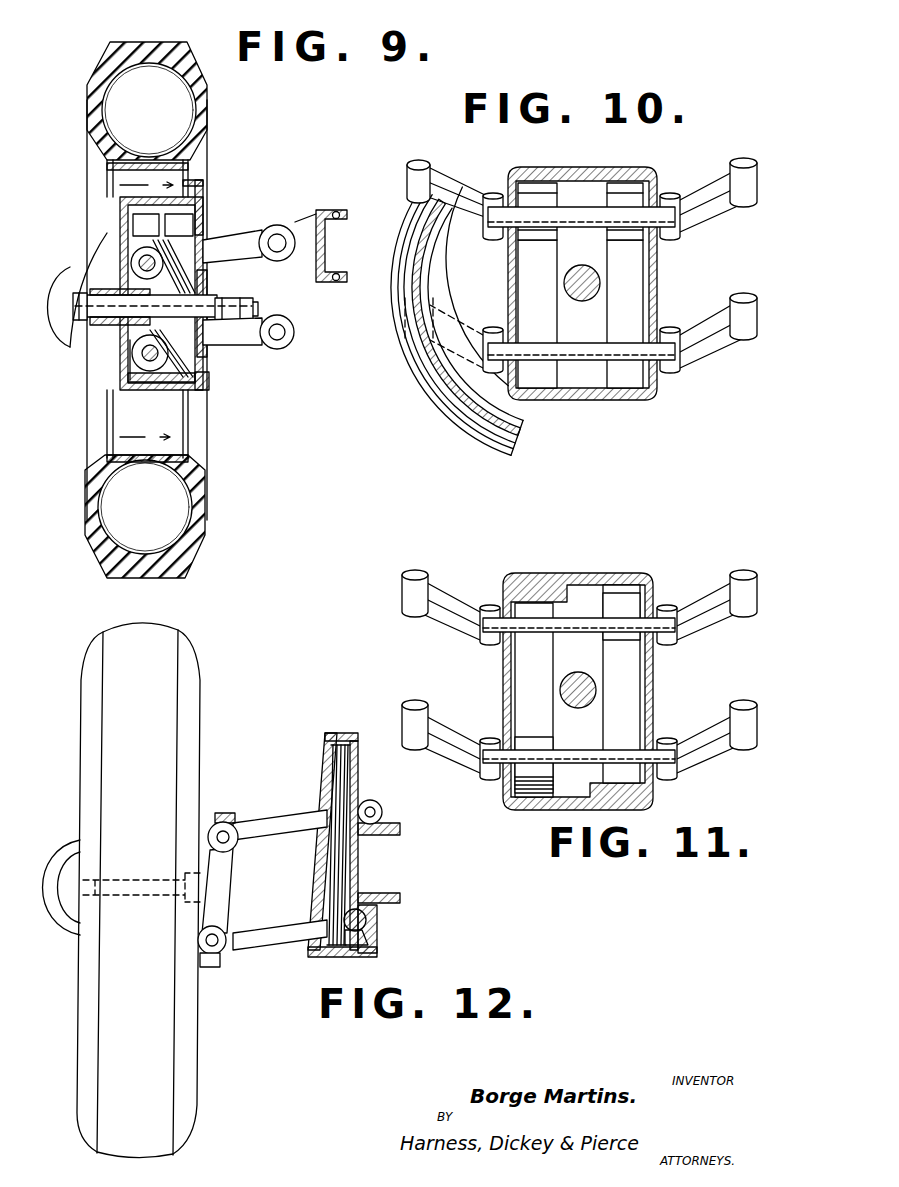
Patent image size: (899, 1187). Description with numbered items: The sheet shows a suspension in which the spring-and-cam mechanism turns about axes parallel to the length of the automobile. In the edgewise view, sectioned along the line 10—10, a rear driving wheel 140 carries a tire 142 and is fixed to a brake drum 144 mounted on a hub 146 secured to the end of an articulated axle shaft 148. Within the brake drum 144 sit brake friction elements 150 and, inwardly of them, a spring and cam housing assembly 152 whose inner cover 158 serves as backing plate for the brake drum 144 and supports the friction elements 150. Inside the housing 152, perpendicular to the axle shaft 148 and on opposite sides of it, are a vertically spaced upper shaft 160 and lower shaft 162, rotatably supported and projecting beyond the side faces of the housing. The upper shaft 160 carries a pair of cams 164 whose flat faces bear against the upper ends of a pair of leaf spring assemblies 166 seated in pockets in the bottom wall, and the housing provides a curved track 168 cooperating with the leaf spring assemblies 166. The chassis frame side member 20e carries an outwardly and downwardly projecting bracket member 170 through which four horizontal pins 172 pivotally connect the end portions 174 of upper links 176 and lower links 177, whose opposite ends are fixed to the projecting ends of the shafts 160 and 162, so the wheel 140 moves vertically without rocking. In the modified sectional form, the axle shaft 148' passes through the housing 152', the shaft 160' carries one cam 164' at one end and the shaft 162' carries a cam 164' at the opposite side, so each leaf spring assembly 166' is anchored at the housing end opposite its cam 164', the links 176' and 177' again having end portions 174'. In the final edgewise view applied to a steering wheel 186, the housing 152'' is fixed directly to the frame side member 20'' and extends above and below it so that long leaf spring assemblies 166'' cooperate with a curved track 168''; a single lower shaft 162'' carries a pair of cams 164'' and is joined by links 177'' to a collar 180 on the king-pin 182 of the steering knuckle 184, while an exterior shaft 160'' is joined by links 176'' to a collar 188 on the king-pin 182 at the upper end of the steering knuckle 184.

In FIG. 9, the section line 10 is at (146, 310).
In FIG. 9, the tire 142 is at (88, 124).
In FIG. 9, the wheel 140 is at (110, 186).
In FIG. 9, the brake drum 144 is at (118, 256).
In FIG. 10, the brake drum 144 is at (498, 448).
In FIG. 9, the hub 146 is at (125, 362).
In FIG. 9, the axle shaft 148 is at (144, 319).
In FIG. 10, the axle shaft 148 is at (632, 280).
In FIG. 9, the brake friction elements 150 is at (188, 215).
In FIG. 10, the brake friction elements 150 is at (462, 398).
In FIG. 9, the spring and cam housing assembly 152 is at (119, 302).
In FIG. 10, the spring and cam housing assembly 152 is at (595, 298).
In FIG. 9, the inner cover 158 is at (150, 384).
In FIG. 10, the upper shaft 160 is at (581, 185).
In FIG. 10, the lower shaft 162 is at (581, 391).
In FIG. 9, the cams 164 is at (101, 307).
In FIG. 10, the cams 164 is at (580, 211).
In FIG. 9, the leaf spring assemblies 166 is at (203, 308).
In FIG. 10, the leaf spring assemblies 166 is at (579, 314).
In FIG. 9, the curved track 168 is at (195, 217).
In FIG. 9, the bracket member 170 is at (283, 232).
In FIG. 9, the pins 172 is at (277, 253).
In FIG. 9, the end portions 174 is at (298, 271).
In FIG. 10, the end portions 174 is at (595, 239).
In FIG. 9, the upper links 176 is at (241, 299).
In FIG. 10, the upper links 176 is at (556, 199).
In FIG. 10, the lower links 177 is at (572, 333).
In FIG. 9, the steering knuckle 184 is at (112, 430).
In FIG. 12, the steering knuckle 184 is at (226, 884).
In FIG. 9, the chassis frame side member 20e is at (325, 245).
In FIG. 11, the axle shaft 148' is at (578, 677).
In FIG. 11, the housing 152' is at (608, 691).
In FIG. 11, the shaft 160' is at (579, 615).
In FIG. 11, the shaft 162' is at (579, 742).
In FIG. 11, the cam 164' is at (570, 673).
In FIG. 11, the leaf spring assemblies 166' is at (583, 691).
In FIG. 11, the end portions 174' is at (589, 644).
In FIG. 11, the upper links 176' is at (579, 597).
In FIG. 11, the lower links 177' is at (583, 749).
In FIG. 12, the wheel 186 is at (190, 670).
In FIG. 12, the housing 152'' is at (320, 845).
In FIG. 12, the frame side member 20'' is at (392, 863).
In FIG. 12, the leaf spring assemblies 166'' is at (312, 845).
In FIG. 12, the curved track 168'' is at (305, 845).
In FIG. 12, the shaft 160'' is at (398, 811).
In FIG. 12, the shaft 162'' is at (391, 918).
In FIG. 12, the cams 164'' is at (391, 940).
In FIG. 12, the links 176'' is at (280, 805).
In FIG. 12, the links 177'' is at (280, 944).
In FIG. 12, the collar 188 is at (232, 848).
In FIG. 12, the king-pin 182 is at (225, 822).
In FIG. 12, the collar 180 is at (222, 958).